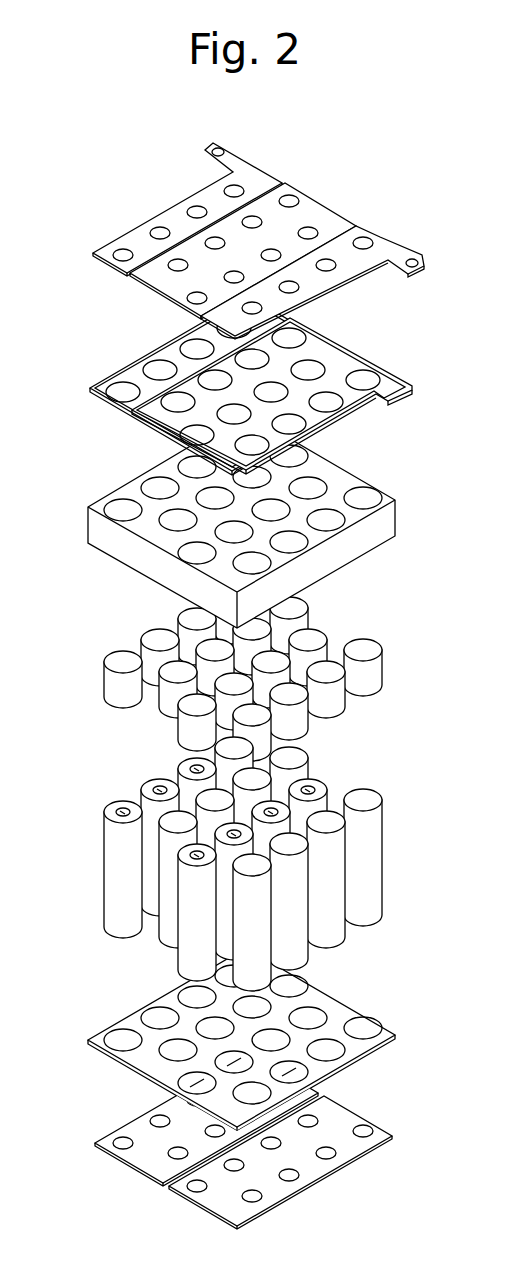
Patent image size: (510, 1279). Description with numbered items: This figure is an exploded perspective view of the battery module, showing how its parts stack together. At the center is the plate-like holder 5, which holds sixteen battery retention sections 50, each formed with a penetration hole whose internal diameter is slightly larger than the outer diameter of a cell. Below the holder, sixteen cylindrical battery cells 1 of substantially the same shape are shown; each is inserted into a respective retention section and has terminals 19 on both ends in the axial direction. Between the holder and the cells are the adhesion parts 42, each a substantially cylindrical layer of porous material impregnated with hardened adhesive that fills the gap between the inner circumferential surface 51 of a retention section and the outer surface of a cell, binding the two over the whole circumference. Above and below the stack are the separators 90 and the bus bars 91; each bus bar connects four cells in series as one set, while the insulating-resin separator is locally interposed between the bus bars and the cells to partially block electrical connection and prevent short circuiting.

The battery cell 1 is at (241, 864).
The holder 5 is at (233, 520).
The terminal 19 is at (118, 806).
The adhesion part 42 is at (108, 687).
The battery retention section 50 is at (367, 491).
The inner circumferential surface 51 is at (367, 503).
The separator 90 is at (317, 343).
The bus bar 91 is at (138, 1118).